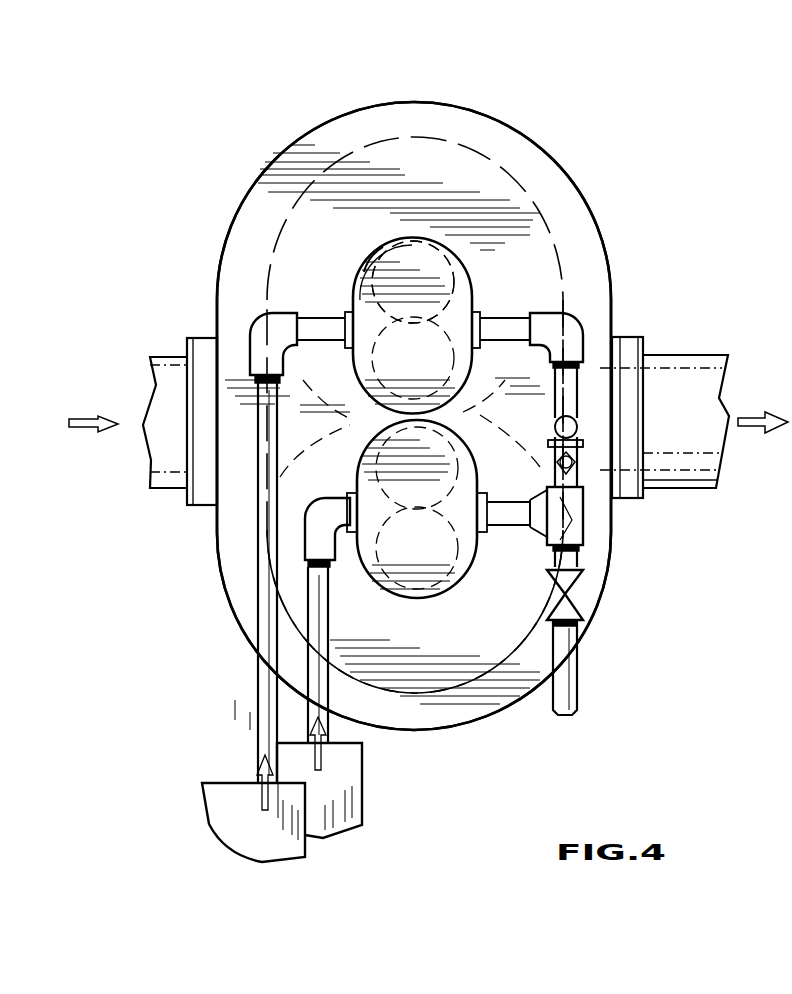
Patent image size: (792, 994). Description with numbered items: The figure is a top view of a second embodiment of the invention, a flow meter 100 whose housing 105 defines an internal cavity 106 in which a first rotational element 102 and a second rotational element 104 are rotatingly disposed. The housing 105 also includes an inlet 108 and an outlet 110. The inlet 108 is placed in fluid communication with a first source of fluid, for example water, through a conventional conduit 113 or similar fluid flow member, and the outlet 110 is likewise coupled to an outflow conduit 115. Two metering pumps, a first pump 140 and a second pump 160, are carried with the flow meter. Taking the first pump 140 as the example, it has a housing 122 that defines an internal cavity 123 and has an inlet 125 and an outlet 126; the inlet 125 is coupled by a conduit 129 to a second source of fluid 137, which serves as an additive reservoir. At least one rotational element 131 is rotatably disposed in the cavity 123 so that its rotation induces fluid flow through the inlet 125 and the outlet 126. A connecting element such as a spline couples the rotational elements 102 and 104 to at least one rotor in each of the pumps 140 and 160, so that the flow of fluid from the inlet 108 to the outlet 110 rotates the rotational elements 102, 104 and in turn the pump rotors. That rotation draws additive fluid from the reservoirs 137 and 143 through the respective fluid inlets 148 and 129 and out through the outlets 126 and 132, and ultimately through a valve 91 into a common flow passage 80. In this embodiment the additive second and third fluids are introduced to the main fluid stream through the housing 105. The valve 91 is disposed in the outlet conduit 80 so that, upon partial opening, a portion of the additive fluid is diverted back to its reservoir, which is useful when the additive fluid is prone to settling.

The flow meter 100 is at (463, 104).
The housing 105 is at (565, 167).
The first rotational element 102 is at (545, 241).
The internal cavity 106 is at (573, 263).
The second rotational element 104 is at (462, 640).
The inlet 108 is at (207, 332).
The conduit 113 is at (167, 467).
The outlet 110 is at (623, 337).
The conduit 115 is at (702, 385).
The housing 122 is at (363, 265).
The rotational element 131 is at (375, 248).
The internal cavity 123 is at (462, 291).
The first pump 140 is at (413, 258).
The fluid inlet 148 is at (322, 617).
The second pump 160 is at (413, 567).
The inlet 125 is at (343, 313).
The conduit 129 is at (262, 697).
The outlet 126 is at (487, 314).
The outlet 132 is at (497, 500).
The valve 91 is at (573, 585).
The common flow passage 80 is at (567, 678).
The reservoir 143 is at (345, 815).
The second source of fluid 137 is at (305, 850).